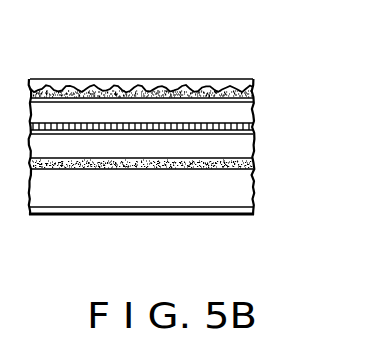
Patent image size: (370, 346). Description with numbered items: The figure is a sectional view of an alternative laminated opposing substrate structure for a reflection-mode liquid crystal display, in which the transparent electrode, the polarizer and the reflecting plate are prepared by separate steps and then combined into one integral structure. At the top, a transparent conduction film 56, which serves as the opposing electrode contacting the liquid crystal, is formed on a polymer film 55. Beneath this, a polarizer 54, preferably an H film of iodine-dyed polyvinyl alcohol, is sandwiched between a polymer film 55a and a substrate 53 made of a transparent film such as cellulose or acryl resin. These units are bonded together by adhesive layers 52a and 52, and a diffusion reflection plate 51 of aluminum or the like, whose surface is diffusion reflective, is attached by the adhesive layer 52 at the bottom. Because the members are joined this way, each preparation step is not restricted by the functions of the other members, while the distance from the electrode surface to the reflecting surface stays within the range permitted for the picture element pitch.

The reflecting plate 51 is at (186, 79).
The adhesive layer 52 is at (229, 90).
The substrate 53 is at (240, 108).
The polarization film 54 is at (257, 125).
The polymer film 55a is at (242, 148).
The adhesive layer 52a is at (255, 165).
The polymer film 55 is at (242, 188).
The transparent conduction film 56 is at (255, 213).